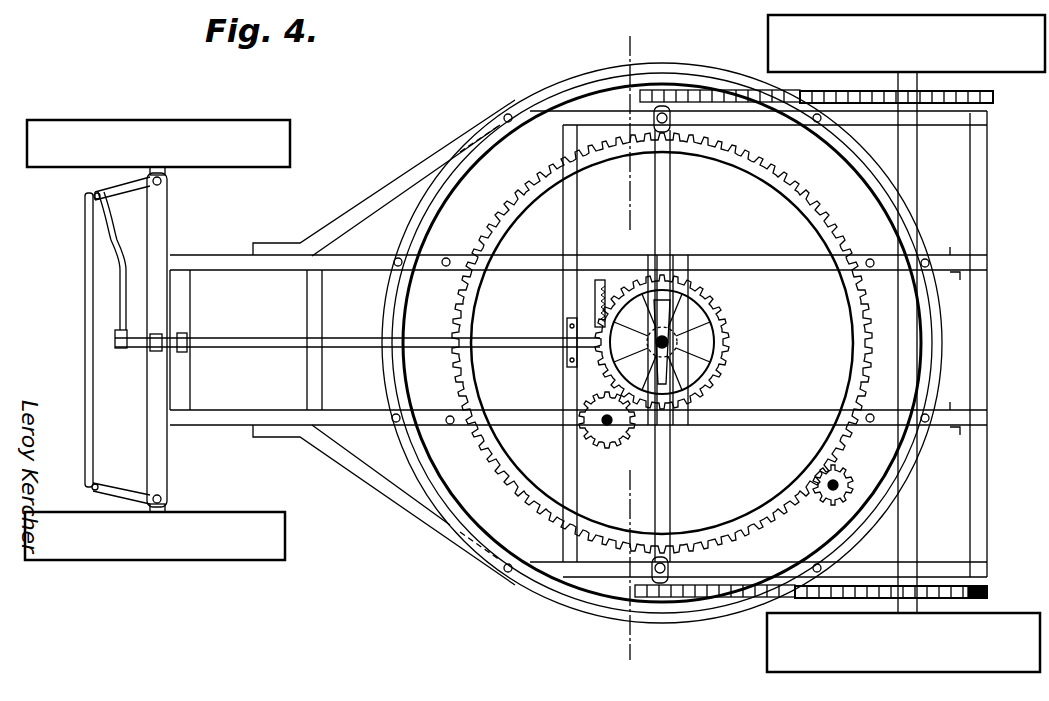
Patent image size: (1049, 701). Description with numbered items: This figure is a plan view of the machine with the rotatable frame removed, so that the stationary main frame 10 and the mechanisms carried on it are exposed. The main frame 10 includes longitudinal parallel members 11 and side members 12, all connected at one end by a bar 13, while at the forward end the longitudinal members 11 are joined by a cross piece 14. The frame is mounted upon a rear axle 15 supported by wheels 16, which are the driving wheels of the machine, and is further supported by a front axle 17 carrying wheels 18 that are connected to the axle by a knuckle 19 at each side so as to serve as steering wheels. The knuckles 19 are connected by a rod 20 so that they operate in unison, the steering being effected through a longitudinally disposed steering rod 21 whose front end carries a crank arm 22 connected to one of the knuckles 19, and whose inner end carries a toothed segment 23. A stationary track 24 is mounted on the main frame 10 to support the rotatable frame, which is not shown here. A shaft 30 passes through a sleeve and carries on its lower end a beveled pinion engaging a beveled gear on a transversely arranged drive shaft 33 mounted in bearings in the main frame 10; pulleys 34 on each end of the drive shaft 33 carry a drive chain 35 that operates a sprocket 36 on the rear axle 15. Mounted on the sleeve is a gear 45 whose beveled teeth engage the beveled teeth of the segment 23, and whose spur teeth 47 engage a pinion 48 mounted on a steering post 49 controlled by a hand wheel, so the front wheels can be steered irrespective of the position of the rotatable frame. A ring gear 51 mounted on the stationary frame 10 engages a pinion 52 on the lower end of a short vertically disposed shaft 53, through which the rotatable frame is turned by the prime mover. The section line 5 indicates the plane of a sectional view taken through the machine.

The section line 5- 5 is at (628, 345).
The main frame 10 is at (430, 168).
The longitudinal parallel members 11 is at (805, 268).
The side members 12 is at (792, 113).
The bar 13 is at (975, 380).
The cross piece 14 is at (193, 308).
The rear axle 15 is at (918, 165).
The wheels 16 is at (1035, 66).
The front axle 17 is at (167, 215).
The wheels 18 is at (285, 122).
The knuckle 19 is at (134, 196).
The rod 20 is at (85, 340).
The steering rod 21 is at (270, 347).
The crank arm 22 is at (120, 348).
The toothed segment 23 is at (600, 280).
The stationary track 24 is at (680, 78).
The shaft 30 is at (668, 346).
The drive shaft 33 is at (668, 108).
The pulleys 34 is at (662, 104).
The drive chain 35 is at (826, 88).
The sprocket 36 is at (985, 586).
The gear 45 is at (718, 340).
The spur teeth 47 is at (705, 320).
The pinion 48 is at (615, 450).
The steering post 49 is at (610, 424).
The ring gear 51 is at (838, 222).
The pinion 52 is at (850, 475).
The shaft 53 is at (830, 492).